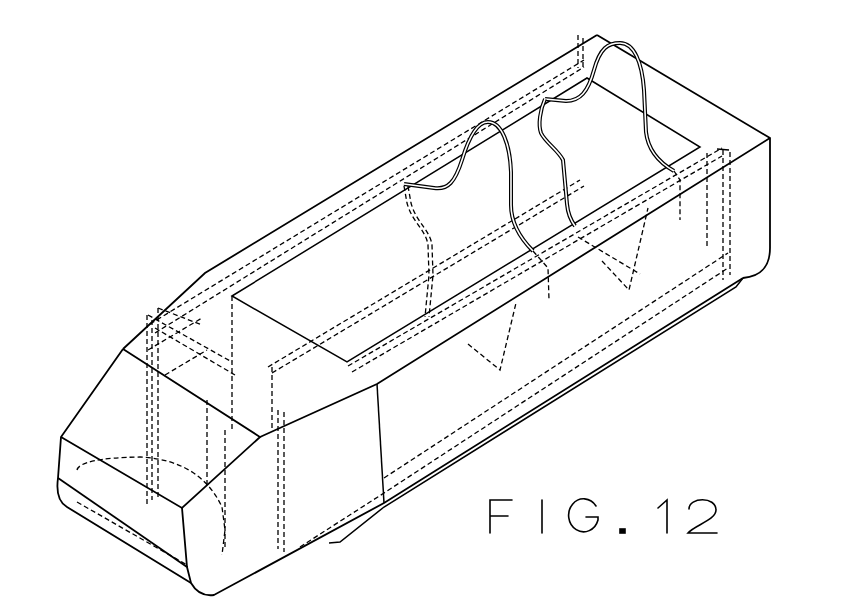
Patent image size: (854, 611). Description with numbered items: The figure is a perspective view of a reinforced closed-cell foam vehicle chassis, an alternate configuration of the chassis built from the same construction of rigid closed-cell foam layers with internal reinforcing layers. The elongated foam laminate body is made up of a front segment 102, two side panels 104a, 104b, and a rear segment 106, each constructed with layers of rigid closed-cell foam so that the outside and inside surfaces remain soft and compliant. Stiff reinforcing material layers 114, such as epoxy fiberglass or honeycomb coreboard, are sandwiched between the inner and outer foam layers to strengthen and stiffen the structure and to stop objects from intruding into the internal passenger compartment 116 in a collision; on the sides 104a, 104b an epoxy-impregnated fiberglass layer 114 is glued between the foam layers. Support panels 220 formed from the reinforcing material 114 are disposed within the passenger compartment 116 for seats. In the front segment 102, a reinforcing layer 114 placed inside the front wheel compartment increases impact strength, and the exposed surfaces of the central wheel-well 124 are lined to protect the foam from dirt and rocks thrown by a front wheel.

The front segment 102 is at (97, 472).
The side panel 104a is at (585, 328).
The side panel 104b is at (324, 194).
The rear segment 106 is at (660, 92).
The reinforcing material layer 114 is at (488, 114).
The passenger compartment 116 is at (316, 272).
The central wheel-well 124 is at (213, 528).
The support panel 220 is at (620, 70).